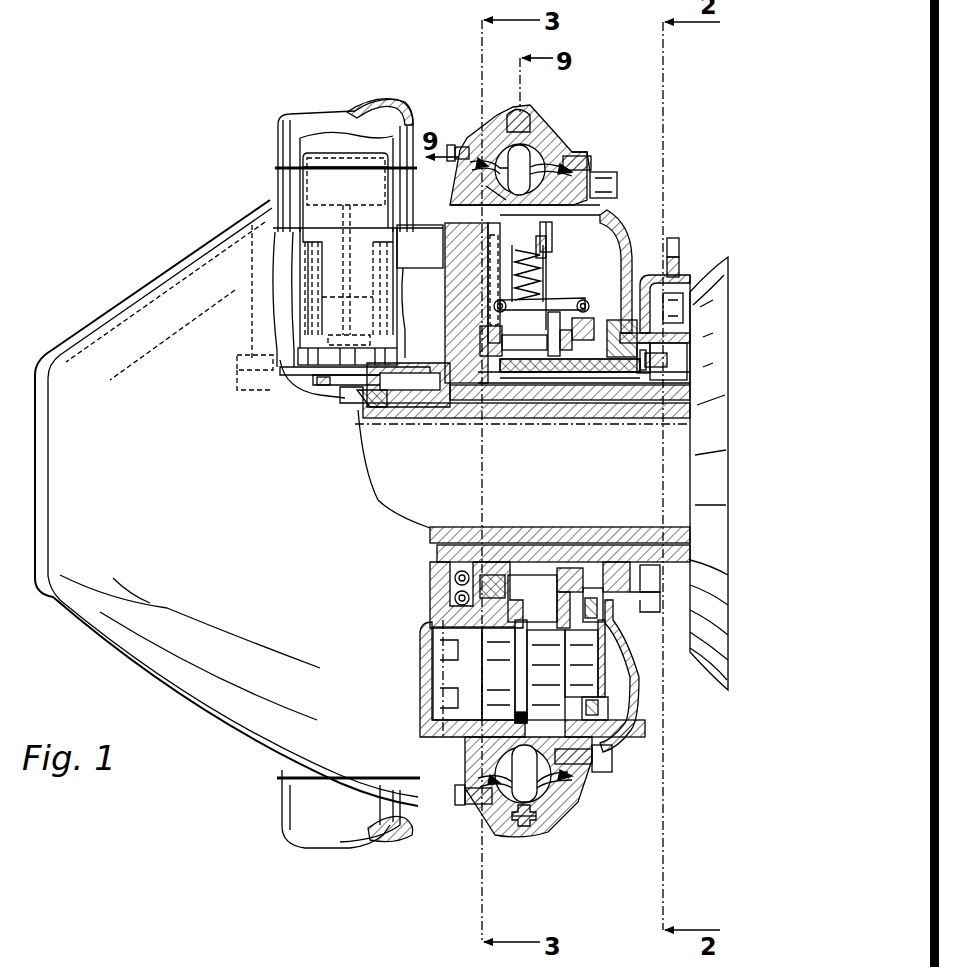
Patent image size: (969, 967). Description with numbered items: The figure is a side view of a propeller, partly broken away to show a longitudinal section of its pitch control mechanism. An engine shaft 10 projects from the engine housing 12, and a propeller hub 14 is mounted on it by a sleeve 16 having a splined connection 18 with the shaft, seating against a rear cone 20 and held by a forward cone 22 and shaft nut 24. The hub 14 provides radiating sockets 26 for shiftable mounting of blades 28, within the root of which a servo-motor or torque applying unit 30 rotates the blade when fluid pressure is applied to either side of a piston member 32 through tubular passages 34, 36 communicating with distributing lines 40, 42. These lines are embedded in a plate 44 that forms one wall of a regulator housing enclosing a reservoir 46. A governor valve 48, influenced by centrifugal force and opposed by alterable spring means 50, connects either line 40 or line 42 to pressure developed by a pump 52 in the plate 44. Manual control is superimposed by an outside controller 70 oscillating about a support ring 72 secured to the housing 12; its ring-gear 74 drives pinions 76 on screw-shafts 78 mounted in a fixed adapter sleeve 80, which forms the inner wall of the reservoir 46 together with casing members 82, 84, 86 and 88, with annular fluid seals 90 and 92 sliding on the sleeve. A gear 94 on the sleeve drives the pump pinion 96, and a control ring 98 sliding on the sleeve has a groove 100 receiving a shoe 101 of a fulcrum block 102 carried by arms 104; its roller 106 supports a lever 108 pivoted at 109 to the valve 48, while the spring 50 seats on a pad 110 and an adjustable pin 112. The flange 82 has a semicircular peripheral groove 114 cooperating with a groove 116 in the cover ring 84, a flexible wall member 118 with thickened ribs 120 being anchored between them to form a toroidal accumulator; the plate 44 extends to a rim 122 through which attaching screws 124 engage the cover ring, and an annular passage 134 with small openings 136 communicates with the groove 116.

The engine shaft 10 is at (430, 524).
The engine housing 12 is at (713, 263).
The propeller hub 14 is at (443, 408).
The sleeve 16 is at (565, 398).
The splined connection 18 is at (420, 408).
The rear cone 20 is at (640, 400).
The forward cone 22 is at (374, 410).
The shaft nut 24 is at (366, 403).
The radiating sockets 26 is at (283, 285).
The blades 28 is at (300, 118).
The servo-motor or torque applying unit 30 is at (318, 178).
The piston member 32 is at (322, 220).
The tubular passage 34 is at (345, 212).
The tubular passage 36 is at (407, 380).
The distributing line 40 is at (455, 598).
The distributing line 42 is at (455, 579).
The plate 44 is at (458, 296).
The reservoir 46 is at (600, 226).
The governor valve 48 is at (498, 242).
The spring means 50 is at (560, 238).
The pump or pressure developing means 52 is at (492, 675).
The outside controller 70 is at (680, 238).
The support ring 72 is at (660, 608).
The ring-gear 74 is at (648, 620).
The pinions 76 is at (668, 358).
The screw-shaft 78 is at (582, 374).
The adapter sleeve 80 is at (535, 376).
The casing member 82 is at (520, 169).
The cover ring 84 is at (522, 120).
The casing member 86 is at (578, 160).
The casing member 88 is at (612, 258).
The annular fluid seal 90 is at (480, 350).
The annular fluid seal 92 is at (487, 576).
The gear 94 is at (600, 368).
The pinion 96 is at (603, 740).
The control ring 98 is at (563, 570).
The groove 100 is at (570, 592).
The shoe 101 is at (560, 340).
The fulcrum block 102 is at (590, 318).
The arms 104 is at (540, 312).
The roller 106 is at (586, 302).
The lever 108 is at (556, 300).
The pivot 109 is at (494, 308).
The pad 110 is at (555, 292).
The adjustable pin 112 is at (553, 246).
The peripheral groove 114 is at (495, 190).
The groove 116 is at (542, 158).
The flexible wall member 118 is at (548, 148).
The thickened ribs 120 is at (575, 166).
The rim 122 is at (468, 146).
The attaching screws 124 is at (453, 145).
The annular passage 134 is at (524, 828).
The small openings 136 is at (552, 822).